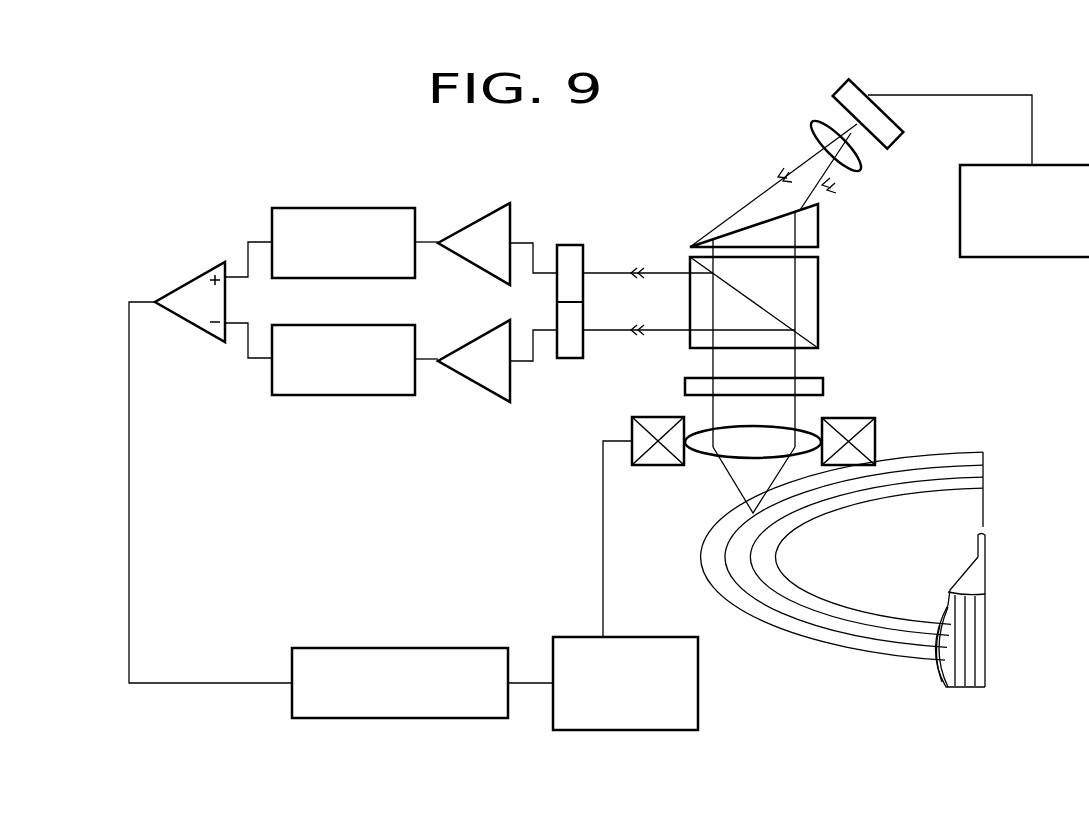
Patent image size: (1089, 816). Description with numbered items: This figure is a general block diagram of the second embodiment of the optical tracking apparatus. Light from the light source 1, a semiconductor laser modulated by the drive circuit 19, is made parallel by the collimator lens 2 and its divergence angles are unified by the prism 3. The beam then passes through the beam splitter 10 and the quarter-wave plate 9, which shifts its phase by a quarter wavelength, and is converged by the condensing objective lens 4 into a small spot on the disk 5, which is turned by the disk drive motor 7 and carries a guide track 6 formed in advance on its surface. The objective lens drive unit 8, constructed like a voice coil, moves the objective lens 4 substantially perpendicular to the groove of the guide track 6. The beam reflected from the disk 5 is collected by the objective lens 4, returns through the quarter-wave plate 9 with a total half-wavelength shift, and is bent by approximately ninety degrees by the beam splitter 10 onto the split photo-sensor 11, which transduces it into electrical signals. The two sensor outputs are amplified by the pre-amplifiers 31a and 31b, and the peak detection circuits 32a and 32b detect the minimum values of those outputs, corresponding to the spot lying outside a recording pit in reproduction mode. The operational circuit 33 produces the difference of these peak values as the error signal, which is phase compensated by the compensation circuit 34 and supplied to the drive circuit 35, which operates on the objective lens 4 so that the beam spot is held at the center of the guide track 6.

The light source 1 is at (832, 96).
The collimator lens 2 is at (813, 128).
The prism 3 is at (821, 229).
The condensing objective lens 4 is at (711, 453).
The disk-type recording medium 5 is at (941, 452).
The guide track 6 is at (969, 462).
The disk drive motor 7 is at (956, 673).
The objective lens drive unit 8 is at (653, 463).
The quarter-wave plate 9 is at (823, 387).
The beam splitter 10 is at (819, 295).
The split photo-sensor 11 is at (582, 245).
The drive circuit 19 is at (1016, 258).
The pre-amplifier 31a is at (481, 216).
The pre-amplifier 31b is at (483, 393).
The peak detection circuit 32a is at (377, 190).
The peak detection circuit 32b is at (373, 397).
The operational circuit 33 is at (178, 284).
The compensation circuit 34 is at (350, 647).
The drive circuit 35 is at (698, 698).